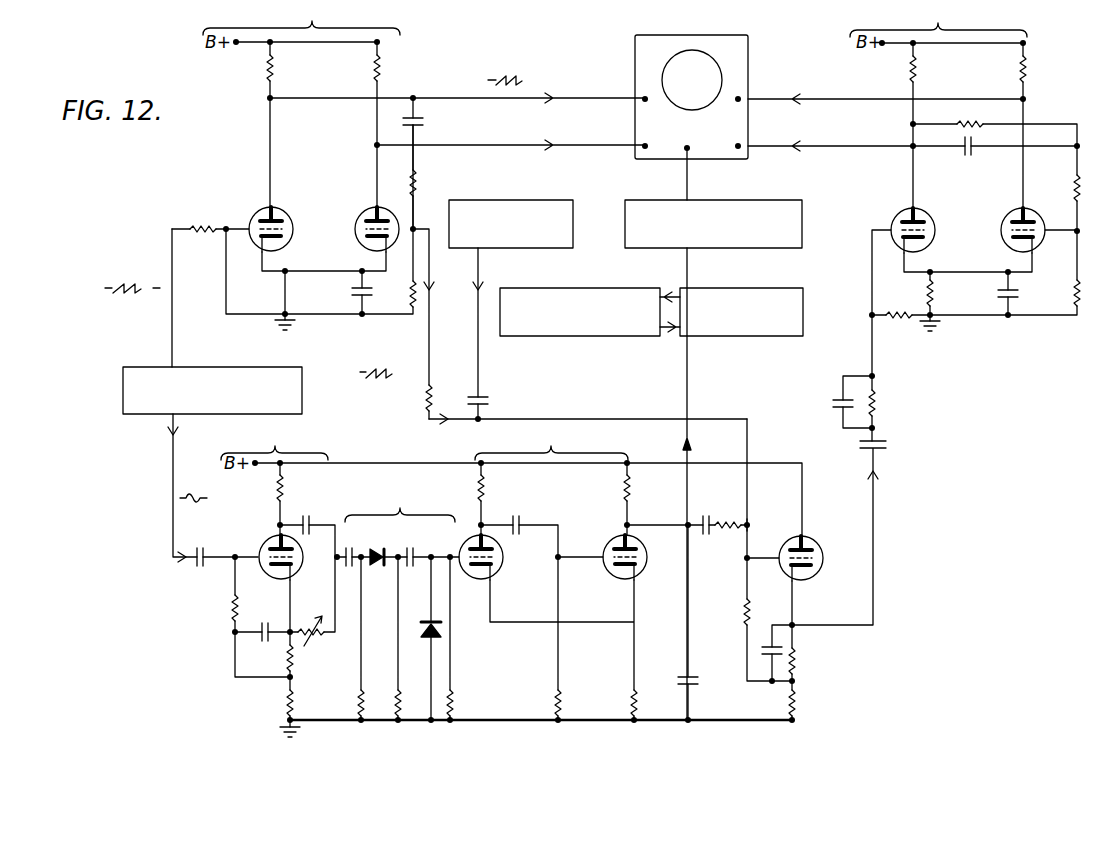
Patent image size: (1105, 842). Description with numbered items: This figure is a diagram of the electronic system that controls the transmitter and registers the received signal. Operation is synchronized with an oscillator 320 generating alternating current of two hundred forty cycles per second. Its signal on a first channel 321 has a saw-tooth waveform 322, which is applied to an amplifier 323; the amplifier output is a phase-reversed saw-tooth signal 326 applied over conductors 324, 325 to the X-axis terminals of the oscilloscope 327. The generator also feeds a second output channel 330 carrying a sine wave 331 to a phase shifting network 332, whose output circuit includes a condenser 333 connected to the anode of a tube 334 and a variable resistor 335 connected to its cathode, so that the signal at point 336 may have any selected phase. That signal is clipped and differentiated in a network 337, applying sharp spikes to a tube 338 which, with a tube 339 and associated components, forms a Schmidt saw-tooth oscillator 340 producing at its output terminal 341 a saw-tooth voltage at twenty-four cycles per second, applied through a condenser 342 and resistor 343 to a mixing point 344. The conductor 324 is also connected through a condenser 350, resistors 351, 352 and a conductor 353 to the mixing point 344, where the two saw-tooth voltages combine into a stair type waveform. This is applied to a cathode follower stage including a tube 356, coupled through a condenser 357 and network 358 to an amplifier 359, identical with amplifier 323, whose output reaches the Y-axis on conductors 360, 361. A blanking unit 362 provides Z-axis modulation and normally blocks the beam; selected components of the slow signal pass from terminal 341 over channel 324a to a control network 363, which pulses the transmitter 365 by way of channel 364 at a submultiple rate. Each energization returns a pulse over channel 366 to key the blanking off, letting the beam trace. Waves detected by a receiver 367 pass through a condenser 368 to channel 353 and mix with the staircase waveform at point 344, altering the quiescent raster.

The oscillator 320 is at (122, 384).
The first channel 321 is at (172, 340).
The saw-tooth waveform 322 is at (118, 285).
The amplifier 323 is at (301, 130).
The conductor 324 is at (493, 100).
The channel 324a is at (689, 394).
The conductor 325 is at (493, 147).
The saw-tooth signal 326 is at (530, 80).
The oscilloscope 327 is at (699, 40).
The second output channel 330 is at (174, 481).
The sine wave 331 is at (197, 504).
The phase shifting network 332 is at (274, 445).
The condenser 333 is at (312, 511).
The tube 334 is at (264, 550).
The variable resistor 335 is at (313, 633).
The point 336 is at (348, 556).
The network 337 is at (400, 508).
The tube 338 is at (461, 554).
The tube 339 is at (607, 552).
The Schmidt saw-tooth oscillator 340 is at (551, 445).
The output terminal 341 is at (686, 525).
The condenser 342 is at (713, 517).
The resistor 343 is at (723, 531).
The mixing point 344 is at (746, 528).
The condenser 350 is at (426, 121).
The resistor 351 is at (424, 166).
The resistor 352 is at (433, 398).
The conductor 353 is at (636, 419).
The tube 356 is at (813, 549).
The condenser 357 is at (886, 447).
The network 358 is at (850, 386).
The amplifier 359 is at (947, 131).
The conductor 360 is at (851, 100).
The conductor 361 is at (846, 148).
The blanking unit 362 is at (641, 200).
The control network 363 is at (752, 285).
The channel 364 is at (672, 292).
The transmitter 365 is at (578, 289).
The channel 366 is at (675, 334).
The receiver 367 is at (514, 200).
The condenser 368 is at (482, 403).